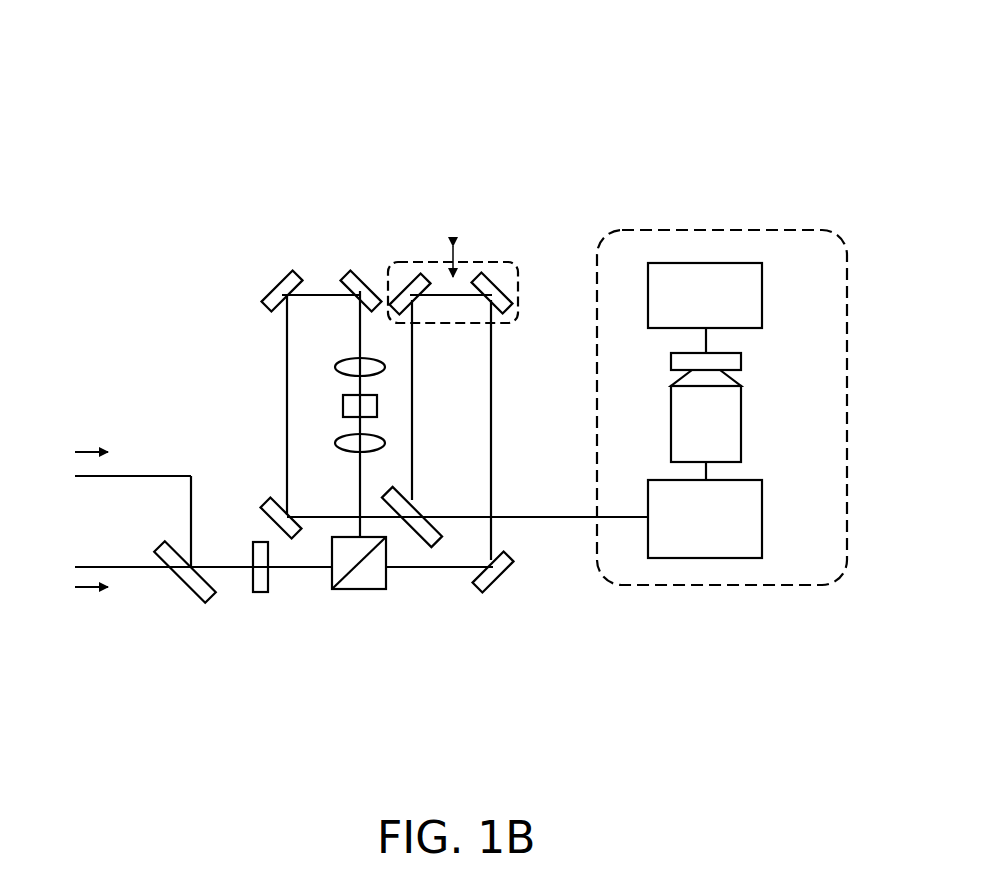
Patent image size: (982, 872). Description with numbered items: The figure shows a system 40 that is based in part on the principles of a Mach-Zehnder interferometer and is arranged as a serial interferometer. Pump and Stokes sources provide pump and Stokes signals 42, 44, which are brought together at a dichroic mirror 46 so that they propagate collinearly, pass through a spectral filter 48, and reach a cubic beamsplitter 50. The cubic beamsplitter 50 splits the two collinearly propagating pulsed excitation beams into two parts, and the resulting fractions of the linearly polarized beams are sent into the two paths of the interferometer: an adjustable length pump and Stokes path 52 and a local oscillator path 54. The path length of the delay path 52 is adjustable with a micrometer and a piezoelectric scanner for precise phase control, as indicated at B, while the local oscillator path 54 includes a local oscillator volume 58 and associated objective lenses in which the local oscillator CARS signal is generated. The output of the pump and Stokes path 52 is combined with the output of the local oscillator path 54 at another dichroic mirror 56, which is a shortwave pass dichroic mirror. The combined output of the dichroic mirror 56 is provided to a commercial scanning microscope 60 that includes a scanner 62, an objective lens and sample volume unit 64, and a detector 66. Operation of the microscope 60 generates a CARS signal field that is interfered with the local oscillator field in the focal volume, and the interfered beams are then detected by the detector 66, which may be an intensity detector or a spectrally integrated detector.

The system 40 is at (548, 75).
The pump signal 42 is at (159, 475).
The Stokes signal 44 is at (142, 570).
The dichroic mirror 46 is at (200, 598).
The spectral filter 48 is at (264, 593).
The cubic beamsplitter 50 is at (360, 592).
The adjustable length pump and Stokes path 52 is at (512, 240).
The local oscillator path 54 is at (285, 248).
The dichroic mirror 56 is at (420, 510).
The local oscillator volume 58 is at (343, 409).
The commercial scanning microscope 60 is at (732, 230).
The scanner 62 is at (762, 524).
The objective lens and sample volume unit 64 is at (741, 382).
The detector 66 is at (762, 302).